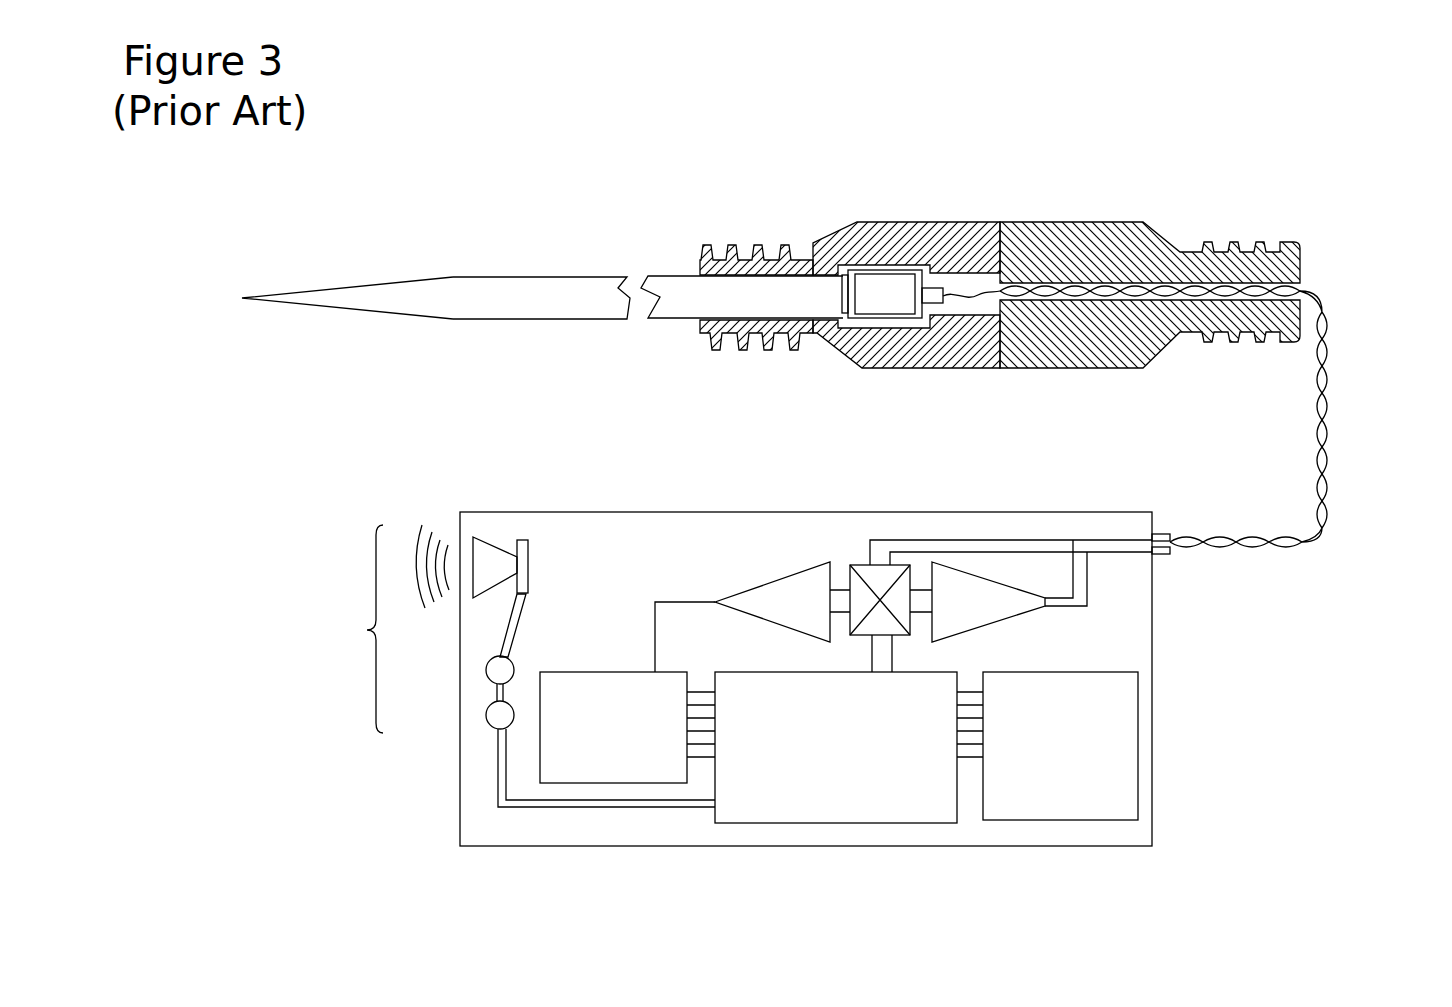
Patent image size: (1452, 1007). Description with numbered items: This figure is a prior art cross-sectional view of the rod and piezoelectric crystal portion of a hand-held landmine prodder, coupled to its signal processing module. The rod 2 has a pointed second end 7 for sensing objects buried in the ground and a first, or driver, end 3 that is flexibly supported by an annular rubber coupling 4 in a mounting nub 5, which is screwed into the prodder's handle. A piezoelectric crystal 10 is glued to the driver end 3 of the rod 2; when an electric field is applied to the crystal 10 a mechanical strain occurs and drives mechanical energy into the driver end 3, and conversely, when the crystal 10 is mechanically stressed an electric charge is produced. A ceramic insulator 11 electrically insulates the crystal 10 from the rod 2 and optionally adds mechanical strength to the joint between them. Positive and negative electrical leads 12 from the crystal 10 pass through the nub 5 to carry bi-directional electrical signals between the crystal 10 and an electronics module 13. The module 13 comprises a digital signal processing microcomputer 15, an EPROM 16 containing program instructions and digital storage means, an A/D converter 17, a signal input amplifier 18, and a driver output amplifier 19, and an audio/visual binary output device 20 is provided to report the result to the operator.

The rod 2 is at (543, 318).
The first end 3 is at (680, 272).
The annular rubber coupling 4 is at (695, 330).
The mounting nub 5 is at (1118, 220).
The pointed second end 7 is at (382, 313).
The piezoelectric crystal 10 is at (886, 270).
The ceramic insulator 11 is at (842, 274).
The electrical leads 12 is at (1327, 423).
The electronics module 13 is at (652, 512).
The digital signal processing microcomputer 15 is at (855, 823).
The EPROM 16 is at (1070, 820).
The A/D converter 17 is at (610, 783).
The signal input amplifier 18 is at (790, 572).
The driver output amplifier 19 is at (985, 576).
The audio/visual binary output device 20 is at (515, 666).